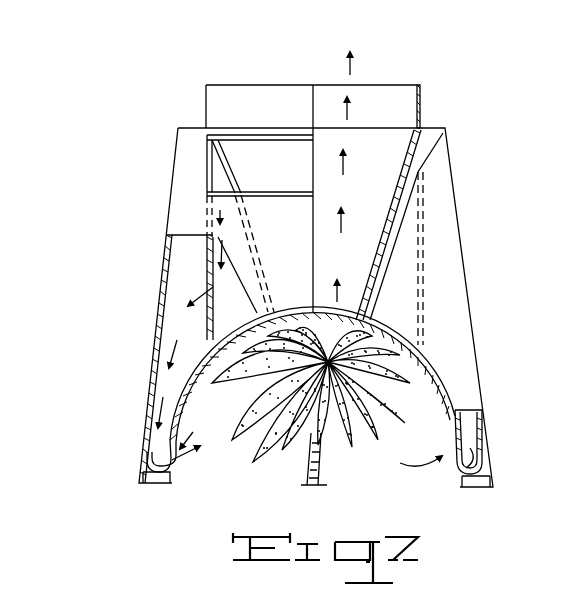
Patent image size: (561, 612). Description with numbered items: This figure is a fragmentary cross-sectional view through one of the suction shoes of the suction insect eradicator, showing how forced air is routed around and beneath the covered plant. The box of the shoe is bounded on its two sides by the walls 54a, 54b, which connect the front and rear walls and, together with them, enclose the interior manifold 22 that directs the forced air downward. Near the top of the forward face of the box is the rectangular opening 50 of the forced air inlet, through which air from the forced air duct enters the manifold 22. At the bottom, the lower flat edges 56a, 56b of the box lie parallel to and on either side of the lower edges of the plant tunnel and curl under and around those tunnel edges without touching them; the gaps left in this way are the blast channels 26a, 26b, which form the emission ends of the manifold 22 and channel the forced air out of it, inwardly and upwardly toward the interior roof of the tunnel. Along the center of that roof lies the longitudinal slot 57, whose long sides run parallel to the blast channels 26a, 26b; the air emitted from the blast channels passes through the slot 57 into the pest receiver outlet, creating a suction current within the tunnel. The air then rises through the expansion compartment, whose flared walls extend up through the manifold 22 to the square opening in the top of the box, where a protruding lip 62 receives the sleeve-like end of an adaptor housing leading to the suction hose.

The interior manifold 22 is at (178, 318).
The rectangular opening 50 is at (255, 160).
The wall 54a is at (173, 197).
The wall 54b is at (458, 200).
The longitudinal slot 57 is at (352, 300).
The protruding lip 62 is at (420, 106).
The blast channel 26a is at (312, 383).
The blast channel 26b is at (431, 453).
The lower flat edge 56a is at (184, 458).
The lower flat edge 56b is at (452, 462).